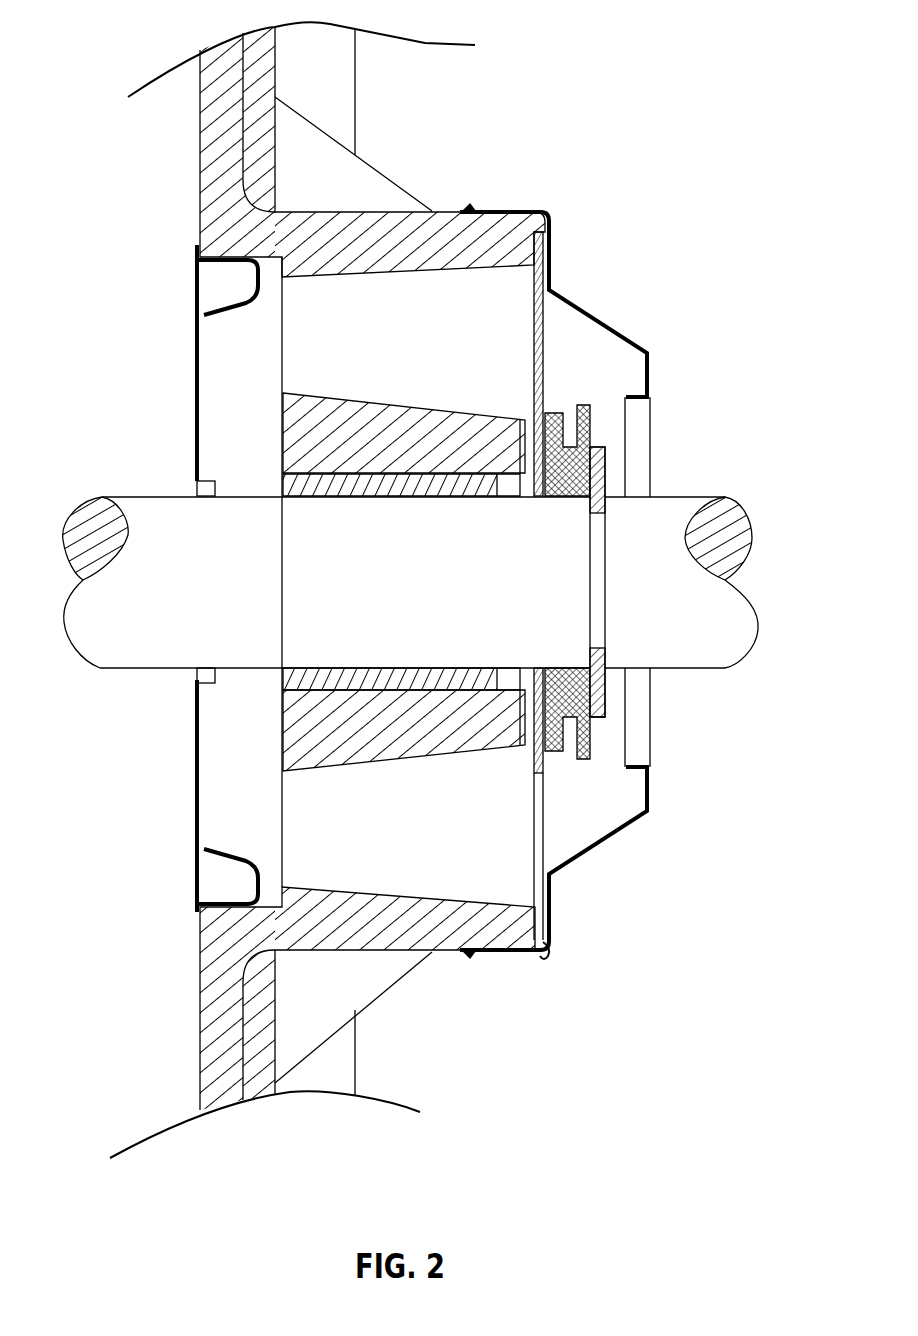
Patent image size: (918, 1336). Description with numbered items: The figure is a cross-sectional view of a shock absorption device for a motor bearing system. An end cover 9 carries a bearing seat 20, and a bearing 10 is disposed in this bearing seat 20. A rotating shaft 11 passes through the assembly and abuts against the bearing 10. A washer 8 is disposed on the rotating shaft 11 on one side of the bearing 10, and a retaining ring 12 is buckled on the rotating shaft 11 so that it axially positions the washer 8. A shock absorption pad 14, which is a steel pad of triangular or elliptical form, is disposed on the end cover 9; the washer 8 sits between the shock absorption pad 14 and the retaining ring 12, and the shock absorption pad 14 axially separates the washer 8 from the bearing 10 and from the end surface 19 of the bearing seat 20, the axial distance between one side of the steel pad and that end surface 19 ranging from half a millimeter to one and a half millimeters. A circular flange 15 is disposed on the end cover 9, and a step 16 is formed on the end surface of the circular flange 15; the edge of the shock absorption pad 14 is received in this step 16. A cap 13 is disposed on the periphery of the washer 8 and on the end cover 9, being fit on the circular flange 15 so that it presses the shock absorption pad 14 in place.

The washer 8 is at (640, 497).
The end cover 9 is at (311, 149).
The bearing 10 is at (296, 602).
The rotating shaft 11 is at (410, 515).
The retaining ring 12 is at (670, 531).
The cap 13 is at (638, 589).
The shock absorption pad 14 is at (636, 586).
The circular flange 15 is at (315, 1022).
The step 16 is at (605, 994).
The end surface 19 is at (660, 722).
The bearing seat 20 is at (300, 591).